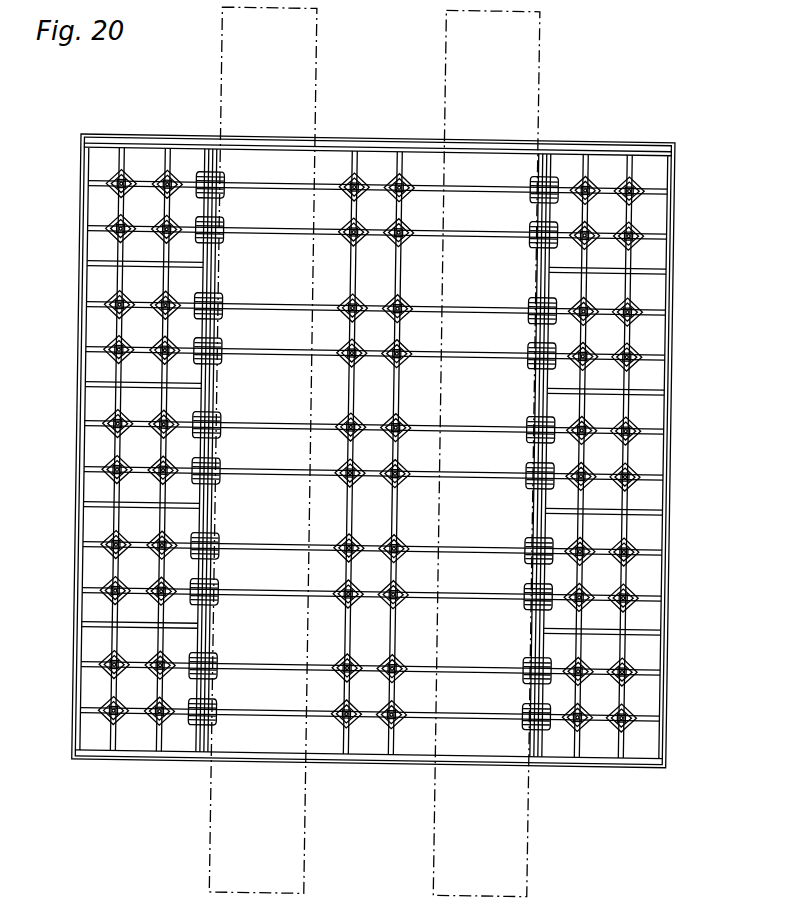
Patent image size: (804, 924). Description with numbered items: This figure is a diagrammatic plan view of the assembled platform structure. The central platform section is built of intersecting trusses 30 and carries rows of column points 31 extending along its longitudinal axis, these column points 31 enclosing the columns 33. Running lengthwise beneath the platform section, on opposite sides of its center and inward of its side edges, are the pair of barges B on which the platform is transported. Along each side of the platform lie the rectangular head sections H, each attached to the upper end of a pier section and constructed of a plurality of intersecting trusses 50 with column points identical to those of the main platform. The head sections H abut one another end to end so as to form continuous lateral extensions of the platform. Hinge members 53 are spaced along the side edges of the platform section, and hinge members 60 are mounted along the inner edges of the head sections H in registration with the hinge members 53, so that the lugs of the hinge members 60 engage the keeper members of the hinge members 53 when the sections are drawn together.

The head section H is at (79, 193).
The barges B is at (318, 69).
The column points 31 is at (160, 173).
The intersecting trusses 30 is at (348, 265).
The columns 33 is at (346, 222).
The intersecting trusses 50 is at (127, 198).
The hinge members 60 is at (203, 170).
The hinge members 53 is at (222, 216).